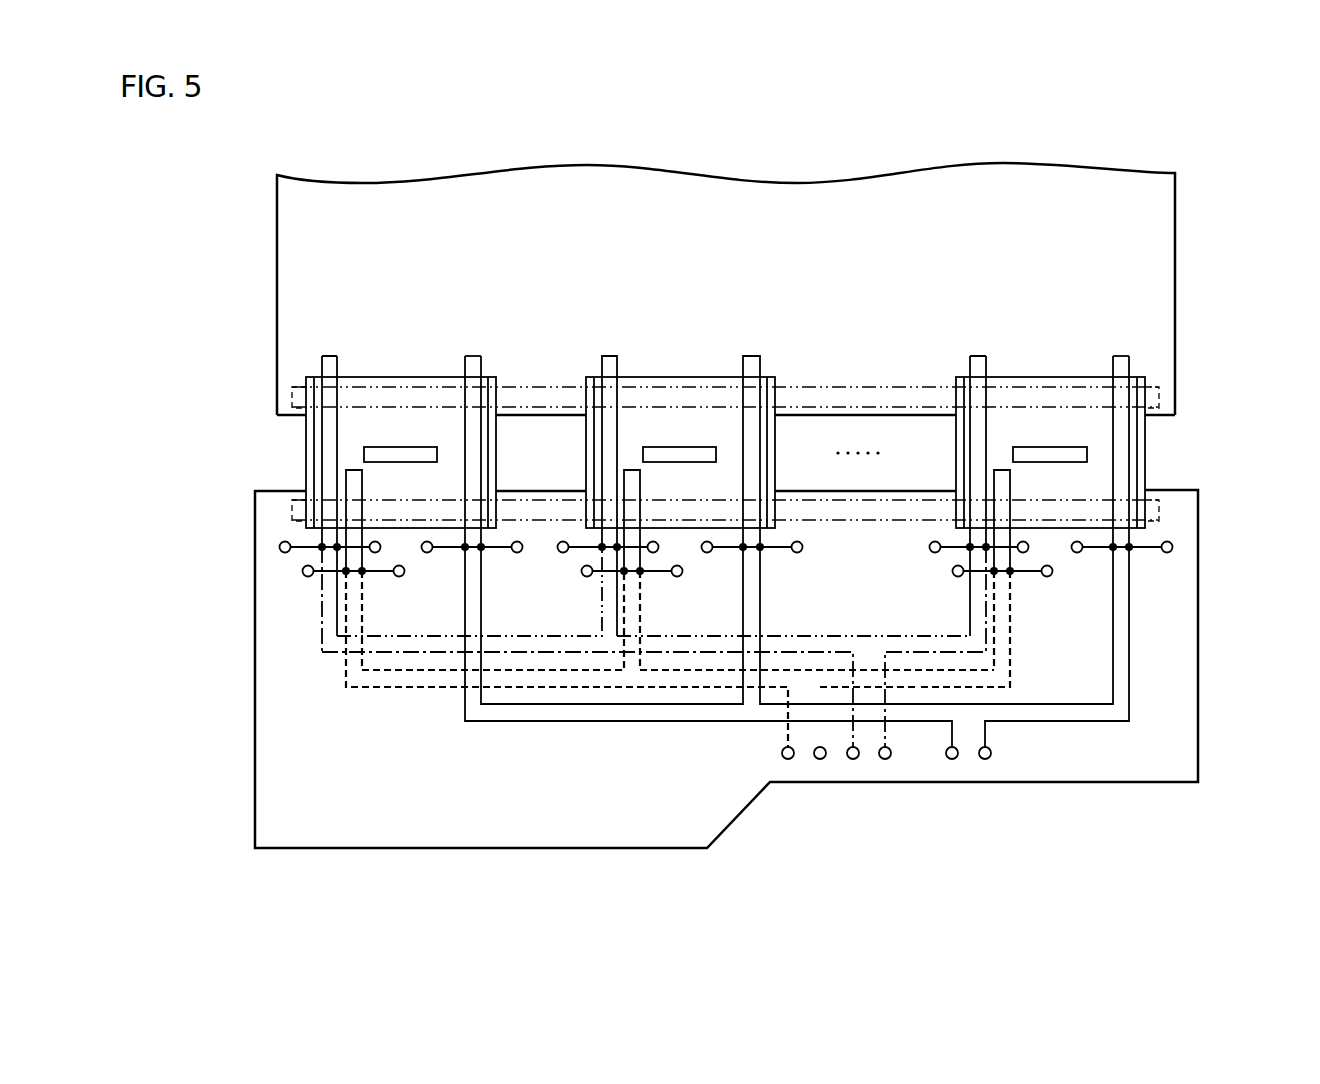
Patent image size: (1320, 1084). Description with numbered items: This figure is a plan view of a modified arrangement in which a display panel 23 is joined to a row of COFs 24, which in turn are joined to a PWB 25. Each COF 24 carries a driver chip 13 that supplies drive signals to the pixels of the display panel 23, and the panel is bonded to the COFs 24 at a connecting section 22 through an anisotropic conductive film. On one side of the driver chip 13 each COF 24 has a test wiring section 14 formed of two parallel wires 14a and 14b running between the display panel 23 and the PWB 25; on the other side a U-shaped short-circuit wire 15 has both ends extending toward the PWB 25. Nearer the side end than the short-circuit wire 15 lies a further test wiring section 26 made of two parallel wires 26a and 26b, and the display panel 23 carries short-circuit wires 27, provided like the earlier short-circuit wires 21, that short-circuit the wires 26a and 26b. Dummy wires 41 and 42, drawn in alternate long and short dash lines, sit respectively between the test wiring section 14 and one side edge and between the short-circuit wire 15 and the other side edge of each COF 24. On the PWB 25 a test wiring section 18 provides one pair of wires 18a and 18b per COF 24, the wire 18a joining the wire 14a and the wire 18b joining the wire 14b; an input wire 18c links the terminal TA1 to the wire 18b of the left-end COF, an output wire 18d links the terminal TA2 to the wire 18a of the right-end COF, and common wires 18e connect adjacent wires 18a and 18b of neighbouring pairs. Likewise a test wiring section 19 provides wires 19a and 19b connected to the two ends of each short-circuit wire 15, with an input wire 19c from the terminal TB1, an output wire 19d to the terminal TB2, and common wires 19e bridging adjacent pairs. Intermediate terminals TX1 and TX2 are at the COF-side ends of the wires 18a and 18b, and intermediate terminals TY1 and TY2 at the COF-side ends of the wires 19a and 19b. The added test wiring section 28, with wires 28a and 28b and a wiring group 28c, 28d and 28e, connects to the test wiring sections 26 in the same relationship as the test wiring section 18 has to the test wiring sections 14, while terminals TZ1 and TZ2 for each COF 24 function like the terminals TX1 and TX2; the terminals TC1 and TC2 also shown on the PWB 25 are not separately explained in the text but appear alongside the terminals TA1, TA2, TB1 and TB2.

The display panel 23 is at (1190, 226).
The PWB 25 is at (1210, 597).
The COFs 24 is at (306, 428).
The driver chip 13 is at (364, 455).
The short-circuit wire 15 is at (346, 480).
The short-circuit wires 27 is at (329, 356).
The connecting section 22 is at (472, 356).
The short-circuit wires 21 is at (1122, 356).
The test wiring sections 26 is at (975, 392).
The wire 26a is at (646, 451).
The wire 26b is at (661, 451).
The test wiring section 14 is at (1255, 347).
The wire 14a is at (805, 451).
The wire 14b is at (789, 451).
The dummy wires 41 is at (1145, 446).
The dummy wires 42 is at (958, 432).
The test wiring section 19 is at (706, 733).
The wire 19a is at (1012, 660).
The wire 19b is at (1012, 630).
The input wire 19c is at (453, 690).
The output wire 19d is at (917, 690).
The common wires 19e is at (655, 673).
The test wiring section 28 is at (624, 717).
The wire 28a is at (985, 628).
The wire 28b is at (985, 598).
The wiring group wire 28c is at (333, 657).
The wiring group wire 28d is at (980, 660).
The wiring group wire 28e is at (387, 637).
The test wiring section 18 is at (864, 737).
The wire 18a is at (1133, 707).
The wire 18b is at (1117, 674).
The input wire 18c is at (662, 723).
The output wire 18d is at (1090, 722).
The common wires 18e is at (703, 706).
The terminal TZ1 is at (279, 547).
The terminal TZ2 is at (370, 552).
The intermediate terminal TY1 is at (302, 573).
The intermediate terminal TY2 is at (394, 576).
The intermediate terminal TX1 is at (427, 553).
The intermediate terminal TX2 is at (517, 553).
The terminal TB1 is at (788, 760).
The terminal TB2 is at (820, 760).
The terminal TC1 is at (853, 760).
The terminal TC2 is at (885, 760).
The terminal TA1 is at (952, 760).
The terminal TA2 is at (985, 760).